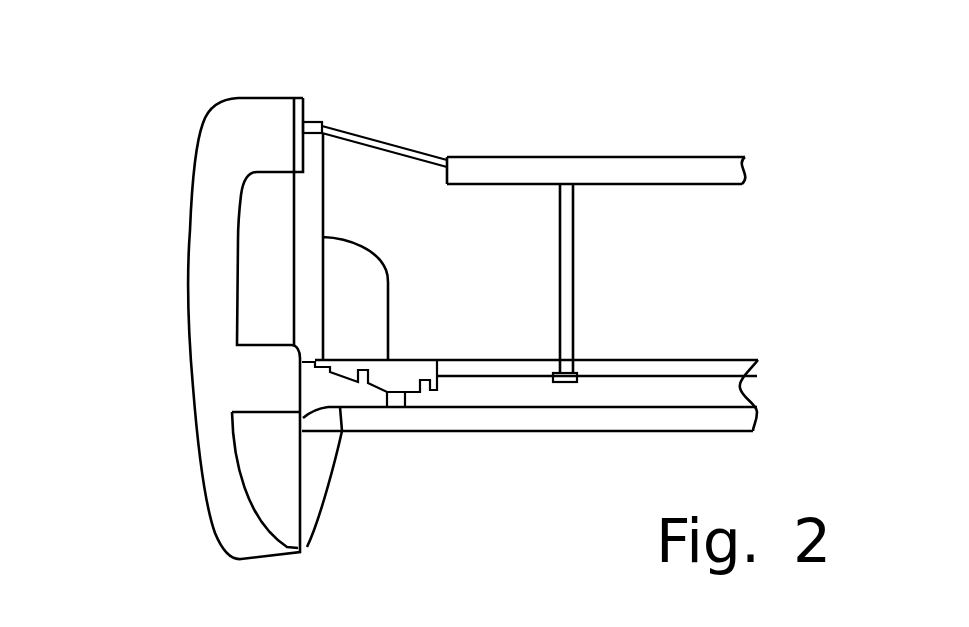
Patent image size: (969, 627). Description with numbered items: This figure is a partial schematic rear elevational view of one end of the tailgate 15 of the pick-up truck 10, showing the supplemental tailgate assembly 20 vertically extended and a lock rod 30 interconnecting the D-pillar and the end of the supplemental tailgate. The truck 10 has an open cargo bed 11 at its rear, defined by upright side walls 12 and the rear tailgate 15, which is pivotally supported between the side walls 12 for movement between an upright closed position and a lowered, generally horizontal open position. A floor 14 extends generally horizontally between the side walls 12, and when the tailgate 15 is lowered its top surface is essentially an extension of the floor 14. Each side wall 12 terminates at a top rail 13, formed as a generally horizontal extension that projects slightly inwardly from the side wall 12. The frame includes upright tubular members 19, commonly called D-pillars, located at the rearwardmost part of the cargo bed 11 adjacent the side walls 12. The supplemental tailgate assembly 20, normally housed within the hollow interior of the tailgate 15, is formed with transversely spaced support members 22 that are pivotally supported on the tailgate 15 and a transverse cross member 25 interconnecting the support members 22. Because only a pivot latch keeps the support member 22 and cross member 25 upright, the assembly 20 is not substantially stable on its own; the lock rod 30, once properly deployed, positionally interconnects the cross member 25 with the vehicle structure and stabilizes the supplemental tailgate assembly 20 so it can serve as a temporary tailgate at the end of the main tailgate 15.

The pick-up truck 10 is at (154, 128).
The cargo bed 11 is at (737, 266).
The side wall 12 is at (190, 343).
The top rail 13 is at (281, 98).
The floor 14 is at (657, 358).
The tailgate 15 is at (740, 388).
The upright tubular member 19 is at (311, 223).
The supplemental tailgate assembly 20 is at (608, 122).
The support member 22 is at (572, 293).
The cross member 25 is at (724, 157).
The lock rod 30 is at (387, 141).